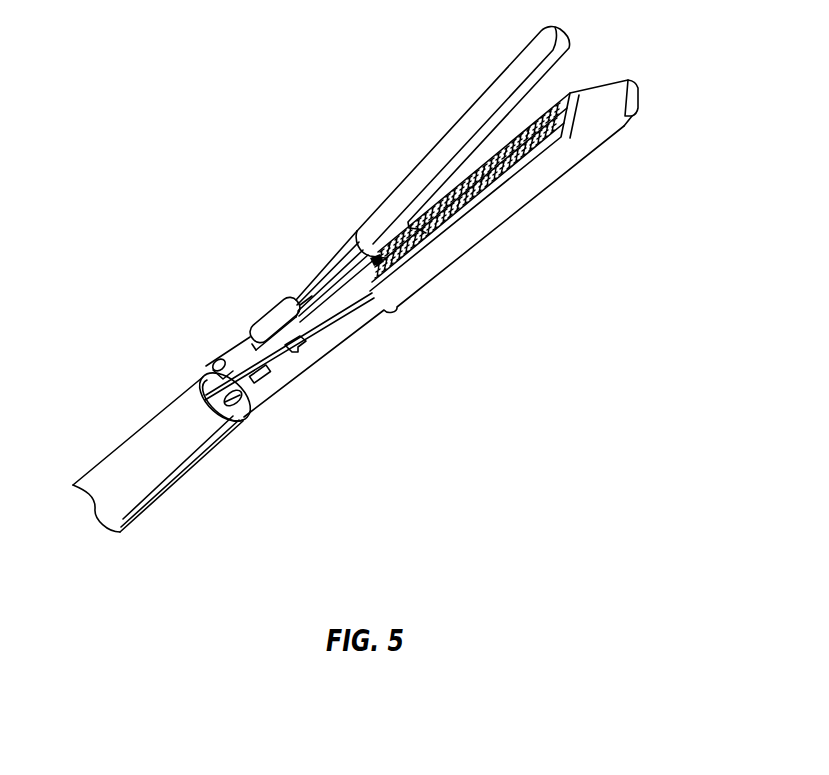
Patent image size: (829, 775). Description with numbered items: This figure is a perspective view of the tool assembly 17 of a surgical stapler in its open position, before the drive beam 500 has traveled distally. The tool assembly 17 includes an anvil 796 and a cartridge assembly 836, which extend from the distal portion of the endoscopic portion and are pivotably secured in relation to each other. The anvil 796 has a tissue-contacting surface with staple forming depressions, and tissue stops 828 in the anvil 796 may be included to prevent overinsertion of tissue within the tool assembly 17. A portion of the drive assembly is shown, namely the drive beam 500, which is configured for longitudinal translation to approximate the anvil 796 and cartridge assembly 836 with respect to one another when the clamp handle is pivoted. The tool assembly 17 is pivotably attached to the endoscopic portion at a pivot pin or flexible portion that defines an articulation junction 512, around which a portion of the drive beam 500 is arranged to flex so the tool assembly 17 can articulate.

The tool assembly 17 is at (467, 169).
The anvil 796 is at (447, 140).
The cartridge assembly 836 is at (497, 220).
The tissue stops 828 is at (437, 240).
The drive beam 500 is at (276, 318).
The articulation junction 512 is at (246, 418).